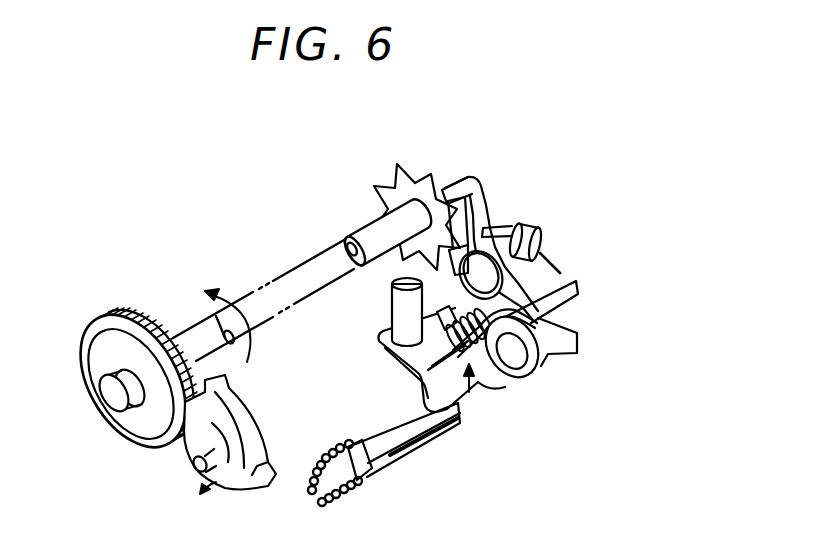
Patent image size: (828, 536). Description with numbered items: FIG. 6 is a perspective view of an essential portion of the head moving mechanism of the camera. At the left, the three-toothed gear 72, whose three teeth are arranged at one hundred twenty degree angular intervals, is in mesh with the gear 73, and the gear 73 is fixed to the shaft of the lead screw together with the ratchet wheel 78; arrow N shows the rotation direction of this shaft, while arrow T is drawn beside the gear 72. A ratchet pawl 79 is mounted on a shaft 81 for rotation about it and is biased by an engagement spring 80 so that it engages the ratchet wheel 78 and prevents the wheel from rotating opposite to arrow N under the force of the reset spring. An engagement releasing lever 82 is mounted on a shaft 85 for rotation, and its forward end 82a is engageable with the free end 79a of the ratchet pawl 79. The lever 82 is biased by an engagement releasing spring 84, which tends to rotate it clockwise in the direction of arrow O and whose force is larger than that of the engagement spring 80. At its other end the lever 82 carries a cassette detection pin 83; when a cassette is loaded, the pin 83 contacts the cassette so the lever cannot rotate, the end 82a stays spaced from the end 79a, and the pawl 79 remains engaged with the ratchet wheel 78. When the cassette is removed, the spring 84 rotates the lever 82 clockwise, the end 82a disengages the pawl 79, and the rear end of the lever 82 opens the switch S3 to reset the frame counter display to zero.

The three-toothed gear 72 is at (256, 420).
The gear 73 is at (147, 320).
The ratchet wheel 78 is at (419, 185).
The ratchet pawl 79 is at (484, 192).
The free end of the ratchet pawl 79a is at (580, 345).
The engagement spring 80 is at (503, 229).
The shaft 81 is at (546, 238).
The engagement releasing lever 82 is at (428, 384).
The forward end of the engagement releasing lever 82a is at (580, 295).
The cassette detection pin 83 is at (399, 314).
The engagement releasing spring 84 is at (541, 347).
The shaft 85 is at (512, 360).
The switch S3 is at (379, 452).
The arrow N is at (227, 313).
The arrow T is at (208, 499).
The arrow O is at (473, 393).